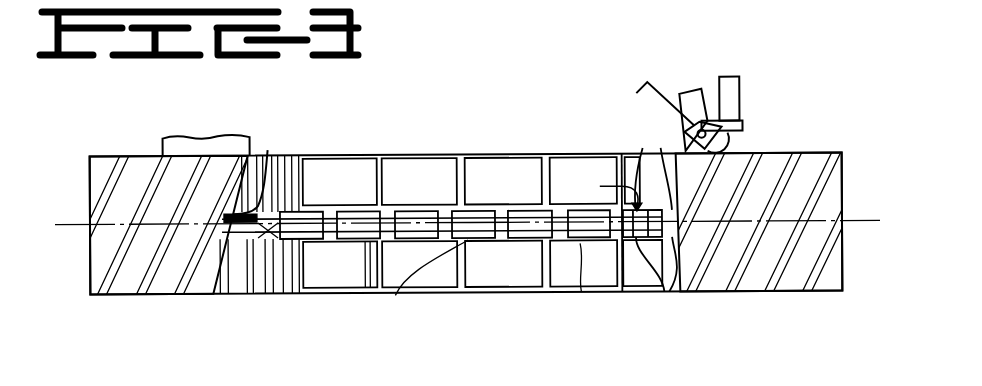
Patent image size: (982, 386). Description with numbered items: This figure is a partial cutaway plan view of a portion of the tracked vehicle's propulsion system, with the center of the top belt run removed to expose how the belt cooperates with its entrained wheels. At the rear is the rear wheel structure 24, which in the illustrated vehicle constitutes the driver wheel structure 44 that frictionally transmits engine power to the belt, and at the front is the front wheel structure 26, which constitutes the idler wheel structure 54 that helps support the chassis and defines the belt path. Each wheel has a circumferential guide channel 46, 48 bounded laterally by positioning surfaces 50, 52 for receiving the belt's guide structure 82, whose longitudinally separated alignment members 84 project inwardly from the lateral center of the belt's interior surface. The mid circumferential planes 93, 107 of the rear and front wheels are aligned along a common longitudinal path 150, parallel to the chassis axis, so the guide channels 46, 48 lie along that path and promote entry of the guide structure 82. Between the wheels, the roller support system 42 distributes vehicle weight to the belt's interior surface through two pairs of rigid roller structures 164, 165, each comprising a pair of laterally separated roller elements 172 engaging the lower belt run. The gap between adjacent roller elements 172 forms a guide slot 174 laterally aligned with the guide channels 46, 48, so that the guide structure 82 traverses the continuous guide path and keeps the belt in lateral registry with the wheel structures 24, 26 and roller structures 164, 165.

The rear wheel structure 24 is at (213, 301).
The front wheel structure 26 is at (650, 302).
The roller support system 42 is at (505, 302).
The driver wheel structure 44 is at (293, 302).
The circumferential guide channel 46 is at (267, 296).
The circumferential guide channel 48 is at (681, 295).
The positioning surface 50 is at (270, 148).
The positioning surface 52 is at (270, 152).
The idler wheel structure 54 is at (672, 304).
The guide structure 82 is at (425, 202).
The alignment member 84 is at (393, 295).
The mid circumferential plane 93 is at (78, 226).
The mid circumferential plane 107 is at (855, 220).
The common longitudinal path 150 is at (498, 209).
The roller structure 164 is at (541, 302).
The roller structure 165 is at (337, 302).
The roller element 172 is at (405, 170).
The guide slot 174 is at (581, 292).